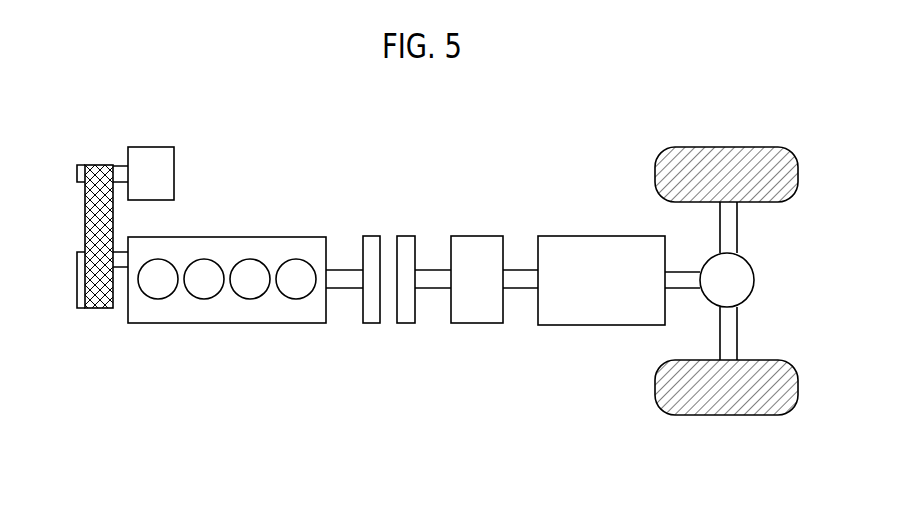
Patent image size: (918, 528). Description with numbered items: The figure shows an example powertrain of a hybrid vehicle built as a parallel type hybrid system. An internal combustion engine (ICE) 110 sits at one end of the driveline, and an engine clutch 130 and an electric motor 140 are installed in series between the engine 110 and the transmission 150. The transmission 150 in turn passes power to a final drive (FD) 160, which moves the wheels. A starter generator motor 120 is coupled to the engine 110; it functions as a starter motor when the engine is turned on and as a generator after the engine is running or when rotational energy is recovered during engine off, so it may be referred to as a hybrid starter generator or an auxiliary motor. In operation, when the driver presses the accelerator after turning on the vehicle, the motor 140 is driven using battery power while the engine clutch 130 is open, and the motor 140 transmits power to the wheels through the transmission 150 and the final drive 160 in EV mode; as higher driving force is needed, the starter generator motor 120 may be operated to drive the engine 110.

The internal combustion engine 110 is at (305, 237).
The starter generator motor 120 is at (175, 153).
The engine clutch 130 is at (405, 236).
The electric motor 140 is at (473, 236).
The transmission 150 is at (597, 236).
The final drive 160 is at (754, 262).